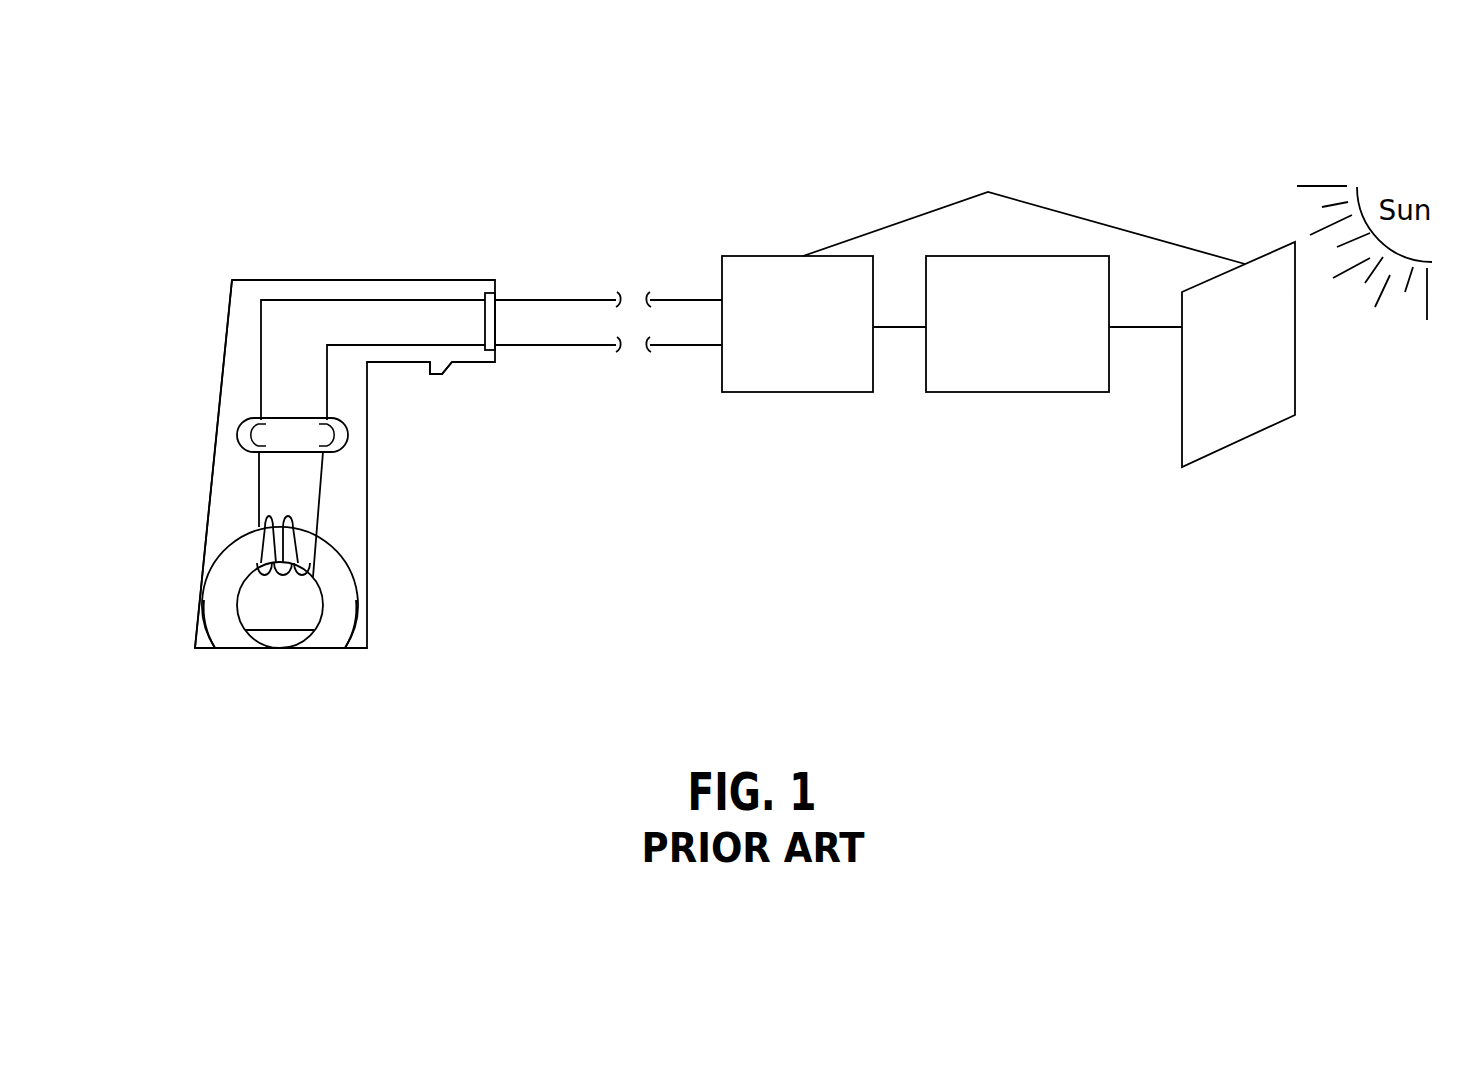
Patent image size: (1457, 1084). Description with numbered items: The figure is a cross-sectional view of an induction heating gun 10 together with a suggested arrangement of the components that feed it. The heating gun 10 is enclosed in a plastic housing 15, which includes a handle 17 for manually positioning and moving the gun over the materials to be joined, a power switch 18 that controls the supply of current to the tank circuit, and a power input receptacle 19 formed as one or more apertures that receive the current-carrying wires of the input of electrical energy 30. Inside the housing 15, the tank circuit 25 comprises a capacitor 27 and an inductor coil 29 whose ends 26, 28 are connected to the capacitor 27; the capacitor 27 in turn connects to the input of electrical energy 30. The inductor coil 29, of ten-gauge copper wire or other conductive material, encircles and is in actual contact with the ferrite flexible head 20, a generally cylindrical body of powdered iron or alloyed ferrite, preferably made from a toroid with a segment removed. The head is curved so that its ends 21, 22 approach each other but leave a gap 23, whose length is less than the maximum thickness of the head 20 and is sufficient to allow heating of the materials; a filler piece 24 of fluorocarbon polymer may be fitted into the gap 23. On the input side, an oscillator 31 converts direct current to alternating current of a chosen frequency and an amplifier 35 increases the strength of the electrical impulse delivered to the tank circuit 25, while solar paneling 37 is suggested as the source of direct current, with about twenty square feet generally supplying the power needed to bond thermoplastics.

The induction heating gun 10 is at (268, 272).
The housing 15 is at (242, 347).
The handle 17 is at (435, 278).
The power switch 18 is at (440, 374).
The power input receptacle 19 is at (486, 293).
The input of electrical energy 30 is at (590, 300).
The capacitor 27 is at (352, 434).
The end of inductor coil 28 is at (332, 453).
The end of inductor coil 26 is at (250, 453).
The tank circuit 25 is at (237, 473).
The inductor coil 29 is at (292, 517).
The ferrite flexible head 20 is at (348, 560).
The end of ferrite flexible head 21 is at (218, 627).
The end of ferrite flexible head 22 is at (343, 637).
The gap 23 is at (303, 645).
The filler piece 24 is at (277, 631).
The amplifier 35 is at (790, 392).
The oscillator 31 is at (1018, 392).
The solar paneling 37 is at (1233, 442).